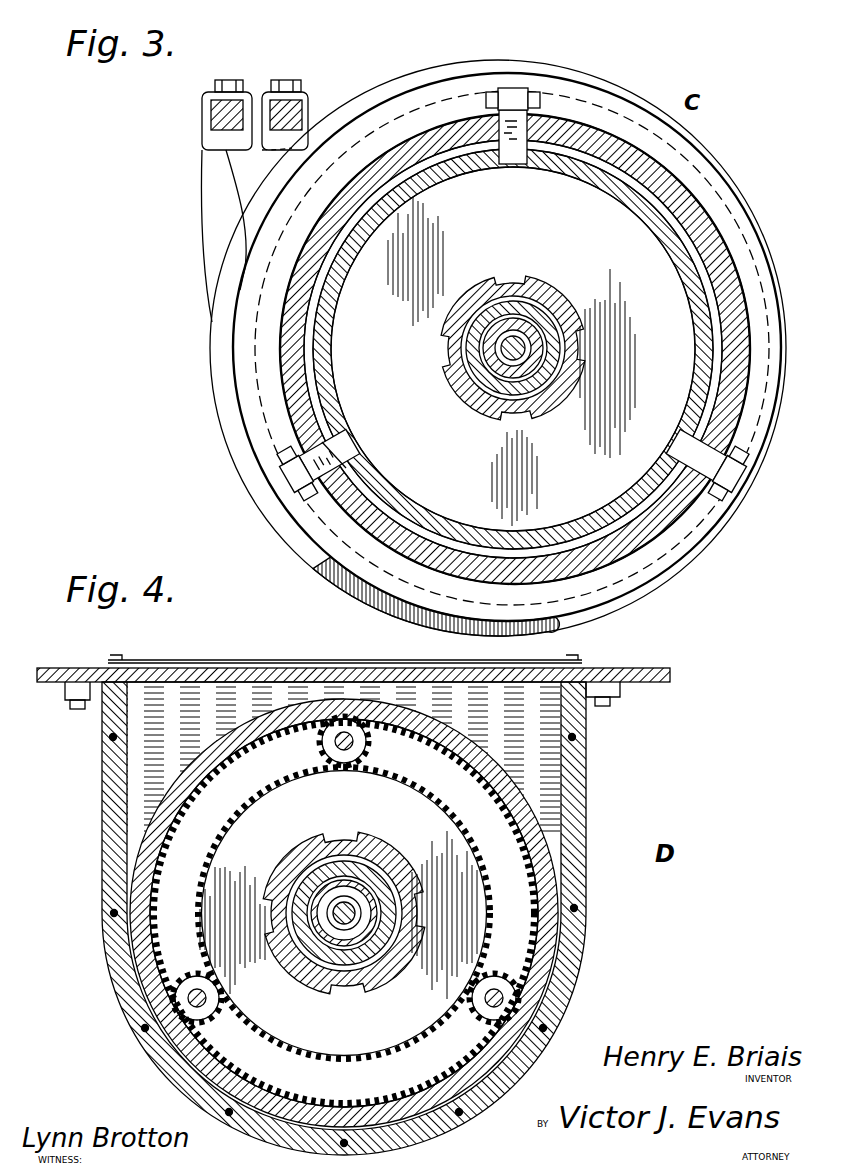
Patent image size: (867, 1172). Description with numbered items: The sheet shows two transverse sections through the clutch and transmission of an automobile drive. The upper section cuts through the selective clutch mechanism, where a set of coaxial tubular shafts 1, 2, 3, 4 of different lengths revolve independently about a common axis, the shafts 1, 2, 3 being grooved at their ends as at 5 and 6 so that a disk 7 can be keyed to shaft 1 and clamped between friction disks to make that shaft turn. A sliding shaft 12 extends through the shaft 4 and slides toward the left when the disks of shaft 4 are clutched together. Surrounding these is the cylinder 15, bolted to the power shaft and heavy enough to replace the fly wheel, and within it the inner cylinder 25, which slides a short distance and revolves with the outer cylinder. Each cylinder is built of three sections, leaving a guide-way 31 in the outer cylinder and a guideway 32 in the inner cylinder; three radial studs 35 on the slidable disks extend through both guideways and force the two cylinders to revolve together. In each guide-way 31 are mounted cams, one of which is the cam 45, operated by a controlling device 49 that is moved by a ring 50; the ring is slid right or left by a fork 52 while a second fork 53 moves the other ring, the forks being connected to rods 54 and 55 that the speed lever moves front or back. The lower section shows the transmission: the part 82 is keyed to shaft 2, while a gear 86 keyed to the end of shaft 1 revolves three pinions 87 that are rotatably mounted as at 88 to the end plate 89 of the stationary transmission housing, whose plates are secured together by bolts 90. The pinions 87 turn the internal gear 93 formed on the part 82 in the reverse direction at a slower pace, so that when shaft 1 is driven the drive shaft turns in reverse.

In FIG. 3, the tubular shaft 1 is at (470, 382).
In FIG. 4, the tubular shaft 1 is at (295, 870).
In FIG. 3, the tubular shaft 2 is at (505, 290).
In FIG. 4, the tubular shaft 2 is at (330, 990).
In FIG. 3, the tubular shaft 3 is at (540, 302).
In FIG. 4, the tubular shaft 3 is at (365, 985).
In FIG. 3, the tubular shaft 4 is at (527, 375).
In FIG. 4, the tubular shaft 4 is at (385, 950).
In FIG. 4, the groove 5 is at (350, 880).
In FIG. 3, the grooved end 6 is at (585, 352).
In FIG. 3, the disk 7 is at (240, 385).
In FIG. 3, the sliding shaft 12 is at (470, 337).
In FIG. 4, the sliding shaft 12 is at (395, 880).
In FIG. 3, the cylinder 15 is at (413, 562).
In FIG. 3, the inner cylinder 25 is at (548, 545).
In FIG. 3, the guide-way 31 is at (495, 108).
In FIG. 3, the guideway 32 is at (335, 430).
In FIG. 3, the radial stud 35 is at (508, 150).
In FIG. 3, the cam 45 is at (512, 95).
In FIG. 3, the controlling device 49 is at (535, 100).
In FIG. 3, the ring 50 is at (700, 150).
In FIG. 3, the fork 52 is at (212, 190).
In FIG. 3, the fork 53 is at (232, 292).
In FIG. 3, the rod 54 is at (222, 112).
In FIG. 3, the rod 55 is at (300, 115).
In FIG. 4, the part 82 is at (127, 868).
In FIG. 4, the gear 86 is at (393, 1070).
In FIG. 4, the pinion 87 is at (345, 831).
In FIG. 4, the pinion mounting 88 is at (356, 741).
In FIG. 4, the end plate 89 is at (384, 913).
In FIG. 4, the bolt 90 is at (113, 737).
In FIG. 4, the internal gear 93 is at (515, 815).